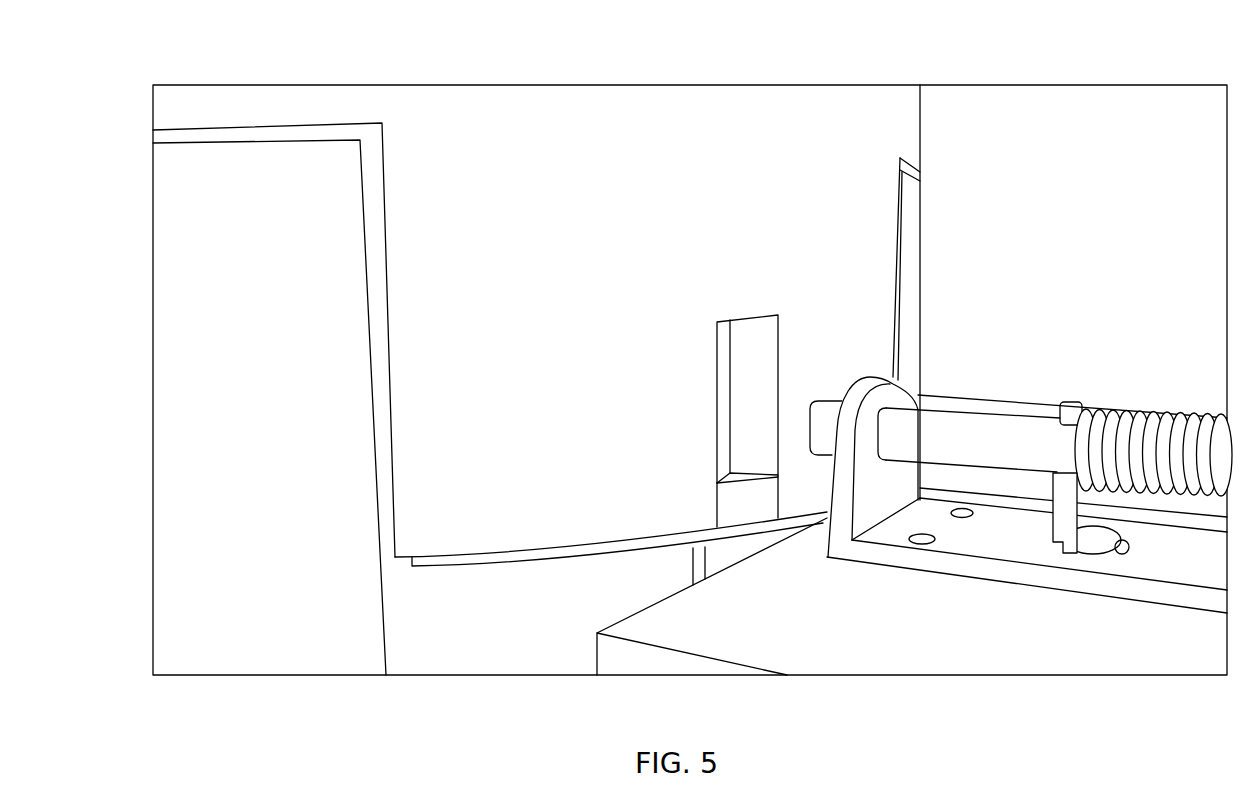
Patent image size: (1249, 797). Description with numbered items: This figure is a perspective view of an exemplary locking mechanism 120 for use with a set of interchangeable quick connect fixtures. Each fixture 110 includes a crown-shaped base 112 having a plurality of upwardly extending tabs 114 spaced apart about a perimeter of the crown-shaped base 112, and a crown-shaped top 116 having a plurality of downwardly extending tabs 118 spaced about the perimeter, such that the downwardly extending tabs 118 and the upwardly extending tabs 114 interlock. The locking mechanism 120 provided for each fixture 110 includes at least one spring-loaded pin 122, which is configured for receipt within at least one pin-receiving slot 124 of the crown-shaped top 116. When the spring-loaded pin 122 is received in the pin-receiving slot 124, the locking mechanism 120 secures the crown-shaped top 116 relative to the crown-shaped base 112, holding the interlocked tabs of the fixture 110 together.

The fixture 110 is at (795, 102).
The crown-shaped base 112 is at (297, 635).
The upwardly extending tabs 114 is at (185, 381).
The crown-shaped top 116 is at (883, 123).
The downwardly extending tabs 118 is at (527, 538).
The locking mechanism 120 is at (970, 568).
The spring-loaded pin 122 is at (1003, 428).
The pin-receiving slot 124 is at (743, 460).